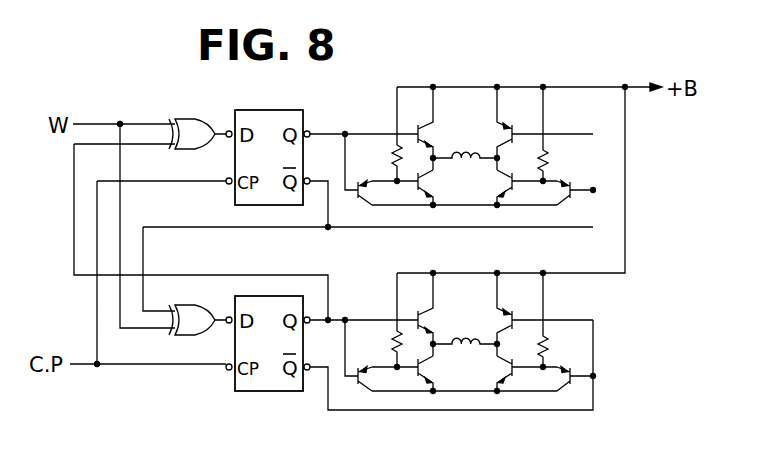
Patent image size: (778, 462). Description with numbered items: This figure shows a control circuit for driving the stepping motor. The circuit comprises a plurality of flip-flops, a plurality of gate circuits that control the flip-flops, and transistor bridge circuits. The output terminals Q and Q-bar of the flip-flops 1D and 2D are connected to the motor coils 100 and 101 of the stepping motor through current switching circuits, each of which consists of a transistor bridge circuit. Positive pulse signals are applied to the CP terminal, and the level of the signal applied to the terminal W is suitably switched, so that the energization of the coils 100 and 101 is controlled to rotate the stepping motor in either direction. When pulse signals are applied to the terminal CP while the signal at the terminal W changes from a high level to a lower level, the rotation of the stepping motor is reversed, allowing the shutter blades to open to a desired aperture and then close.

The motor coil 100 is at (465, 151).
The motor coil 101 is at (465, 327).
The flip-flop 1D is at (233, 192).
The flip-flop 2D is at (233, 378).